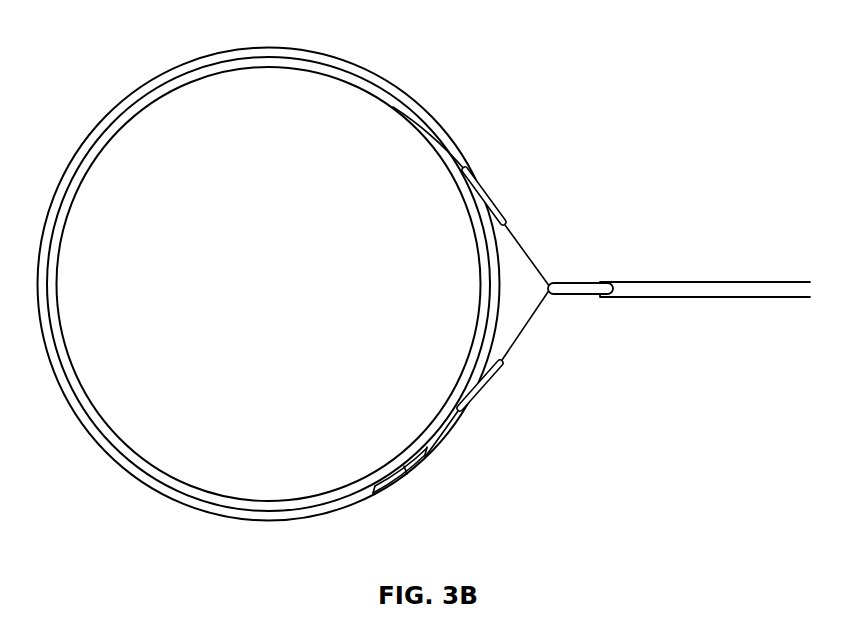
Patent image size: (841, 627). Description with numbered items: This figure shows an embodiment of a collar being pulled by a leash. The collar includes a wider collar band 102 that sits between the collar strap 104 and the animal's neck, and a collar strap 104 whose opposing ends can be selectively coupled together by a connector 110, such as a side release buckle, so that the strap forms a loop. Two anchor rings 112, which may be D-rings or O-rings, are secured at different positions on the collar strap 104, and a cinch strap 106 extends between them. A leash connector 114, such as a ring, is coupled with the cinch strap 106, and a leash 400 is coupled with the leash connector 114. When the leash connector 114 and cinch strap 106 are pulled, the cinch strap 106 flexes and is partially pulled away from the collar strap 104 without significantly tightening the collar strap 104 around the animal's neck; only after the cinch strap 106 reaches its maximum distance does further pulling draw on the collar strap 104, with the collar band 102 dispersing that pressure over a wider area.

The collar band 102 is at (393, 108).
The collar strap 104 is at (438, 123).
The cinch strap 106 is at (531, 328).
The connector 110 is at (417, 467).
The anchor ring 112 is at (485, 185).
The leash connector 114 is at (583, 287).
The leash 400 is at (713, 292).